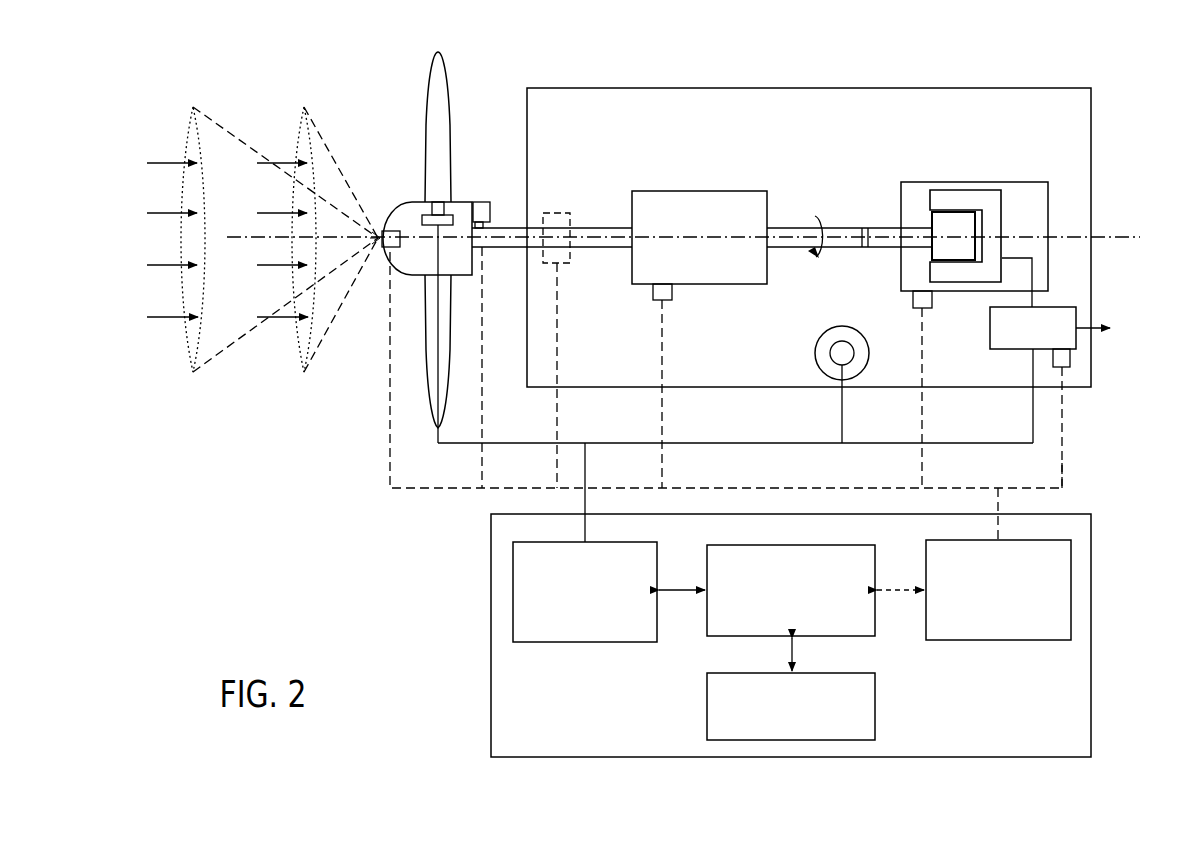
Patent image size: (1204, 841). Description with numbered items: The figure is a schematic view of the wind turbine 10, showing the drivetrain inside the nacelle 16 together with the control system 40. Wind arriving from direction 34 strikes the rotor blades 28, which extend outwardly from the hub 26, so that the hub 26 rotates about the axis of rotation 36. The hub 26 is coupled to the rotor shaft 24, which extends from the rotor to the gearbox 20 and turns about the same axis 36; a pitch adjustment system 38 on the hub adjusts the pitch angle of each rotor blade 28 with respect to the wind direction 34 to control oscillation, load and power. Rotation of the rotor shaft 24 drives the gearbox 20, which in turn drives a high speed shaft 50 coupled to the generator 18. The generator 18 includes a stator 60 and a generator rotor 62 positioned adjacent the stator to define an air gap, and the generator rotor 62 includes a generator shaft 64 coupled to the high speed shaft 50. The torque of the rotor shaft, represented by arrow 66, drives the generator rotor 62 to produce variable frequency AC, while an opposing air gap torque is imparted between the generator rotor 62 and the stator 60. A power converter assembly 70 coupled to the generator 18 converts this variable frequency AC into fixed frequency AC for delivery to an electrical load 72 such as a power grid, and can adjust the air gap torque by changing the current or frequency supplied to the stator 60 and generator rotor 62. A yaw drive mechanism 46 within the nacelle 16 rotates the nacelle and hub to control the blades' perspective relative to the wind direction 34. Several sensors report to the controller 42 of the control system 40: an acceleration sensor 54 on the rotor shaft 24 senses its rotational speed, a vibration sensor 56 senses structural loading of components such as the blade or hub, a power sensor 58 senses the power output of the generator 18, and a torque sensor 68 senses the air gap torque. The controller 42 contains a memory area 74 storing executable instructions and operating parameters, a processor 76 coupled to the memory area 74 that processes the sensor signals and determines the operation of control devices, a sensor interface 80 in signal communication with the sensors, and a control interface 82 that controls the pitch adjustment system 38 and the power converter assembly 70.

The wind turbine 10 is at (989, 38).
The nacelle 16 is at (713, 88).
The generator 18 is at (1010, 182).
The gearbox 20 is at (716, 191).
The rotor shaft 24 is at (596, 228).
The hub 26 is at (463, 202).
The rotor blade 28 is at (447, 72).
The direction of the wind 34 is at (157, 212).
The axis of rotation 36 is at (1118, 233).
The pitch adjustment system 38 is at (413, 302).
The control system 40 is at (436, 614).
The controller 42 is at (491, 673).
The yaw drive mechanism 46 is at (858, 327).
The high speed shaft 50 is at (786, 228).
The acceleration sensor 54 is at (590, 350).
The vibration sensor 56 is at (485, 202).
The power sensor 58 is at (1070, 360).
The stator 60 is at (1001, 200).
The generator rotor 62 is at (930, 212).
The generator shaft 64 is at (876, 228).
The torque 66 is at (822, 260).
The torque sensor 68 is at (933, 303).
The power converter assembly 70 is at (1009, 345).
The electrical load 72 is at (1107, 328).
The memory area 74 is at (877, 705).
The processor 76 is at (856, 637).
The sensor interface 80 is at (998, 642).
The control interface 82 is at (600, 643).